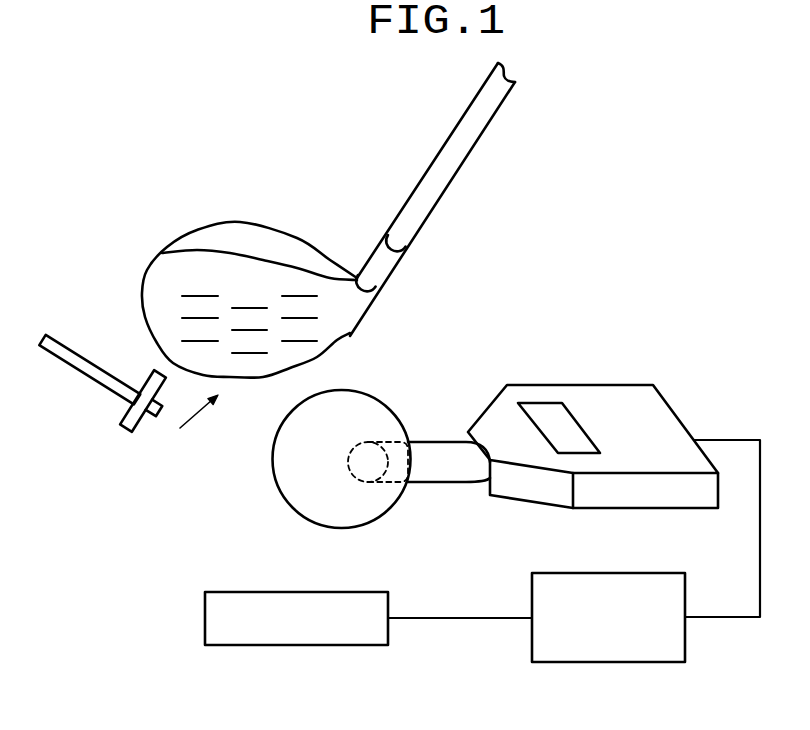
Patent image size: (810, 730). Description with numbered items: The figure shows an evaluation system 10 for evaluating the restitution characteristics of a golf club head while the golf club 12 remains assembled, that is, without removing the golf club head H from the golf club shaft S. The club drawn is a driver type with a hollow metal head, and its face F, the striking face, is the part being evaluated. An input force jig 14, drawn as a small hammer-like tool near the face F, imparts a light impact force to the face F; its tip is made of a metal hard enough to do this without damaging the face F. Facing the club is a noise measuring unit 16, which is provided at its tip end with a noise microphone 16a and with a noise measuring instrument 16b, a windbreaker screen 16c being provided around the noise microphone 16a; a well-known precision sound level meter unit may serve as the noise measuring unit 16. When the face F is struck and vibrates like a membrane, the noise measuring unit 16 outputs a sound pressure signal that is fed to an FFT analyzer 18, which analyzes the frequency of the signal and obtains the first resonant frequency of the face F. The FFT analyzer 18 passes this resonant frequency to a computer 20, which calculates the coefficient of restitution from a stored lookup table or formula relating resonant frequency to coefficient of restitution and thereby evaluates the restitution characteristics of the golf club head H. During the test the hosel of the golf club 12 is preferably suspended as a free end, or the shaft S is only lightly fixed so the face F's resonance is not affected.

The evaluation system 10 is at (572, 235).
The golf club 12 is at (435, 223).
The input force jig 14 is at (128, 433).
The noise measuring unit 16 is at (483, 440).
The noise microphone 16a is at (393, 480).
The noise measuring instrument 16b is at (662, 427).
The windbreaker screen 16c is at (300, 492).
The FFT analyzer 18 is at (615, 662).
The computer 20 is at (205, 620).
The golf club shaft S is at (448, 150).
The golf club head H is at (258, 226).
The face F is at (307, 328).